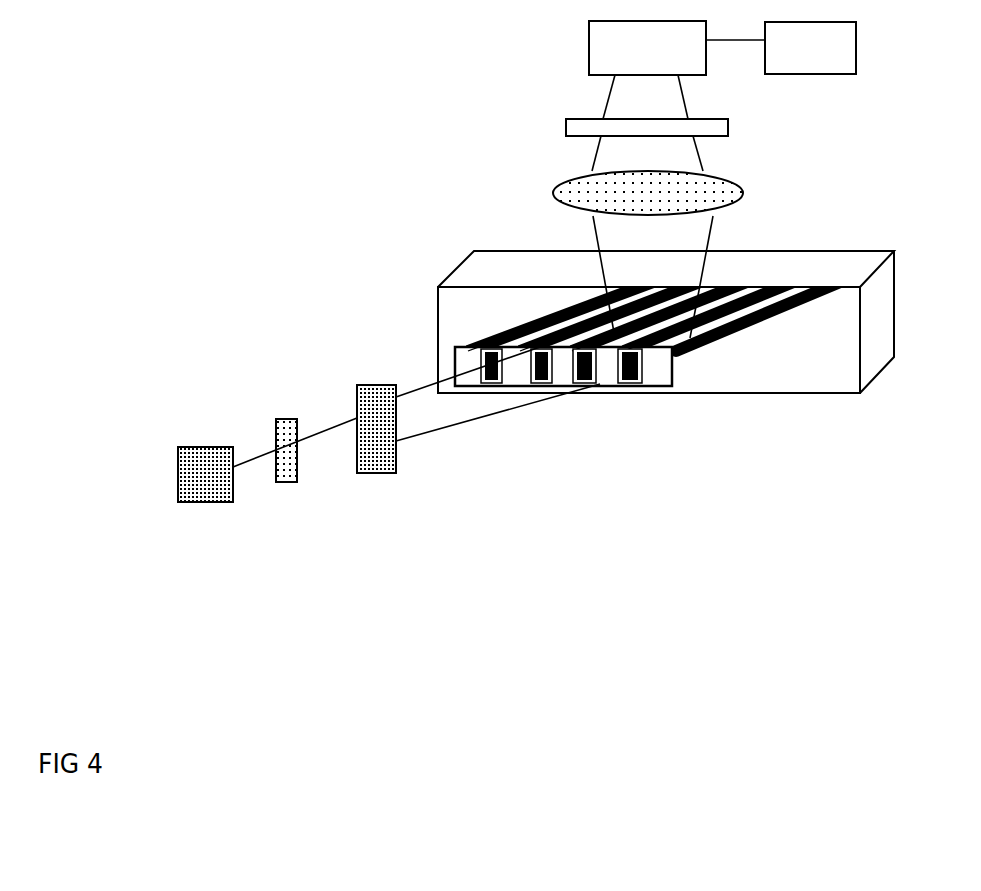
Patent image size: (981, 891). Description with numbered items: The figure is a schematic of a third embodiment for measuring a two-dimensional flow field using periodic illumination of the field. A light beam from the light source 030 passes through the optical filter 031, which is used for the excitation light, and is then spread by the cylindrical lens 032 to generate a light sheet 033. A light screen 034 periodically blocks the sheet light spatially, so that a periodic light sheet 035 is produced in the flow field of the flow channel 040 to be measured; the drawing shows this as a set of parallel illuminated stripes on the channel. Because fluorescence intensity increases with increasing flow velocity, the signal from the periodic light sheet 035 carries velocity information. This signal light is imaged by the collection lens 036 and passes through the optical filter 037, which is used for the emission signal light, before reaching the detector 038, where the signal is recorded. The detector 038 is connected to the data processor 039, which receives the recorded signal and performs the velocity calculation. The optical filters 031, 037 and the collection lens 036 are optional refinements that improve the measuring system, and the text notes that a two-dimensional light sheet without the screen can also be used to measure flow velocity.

The light source 030 is at (251, 501).
The optical filter 031 is at (270, 400).
The cylindrical lens 032 is at (414, 468).
The light sheet 033 is at (477, 415).
The light screen 034 is at (608, 373).
The periodic light sheet 035 is at (533, 312).
The collection lens 036 is at (533, 199).
The optical filter 037 is at (542, 127).
The detector 038 is at (568, 48).
The data processor 039 is at (844, 93).
The flow channel 040 is at (794, 375).